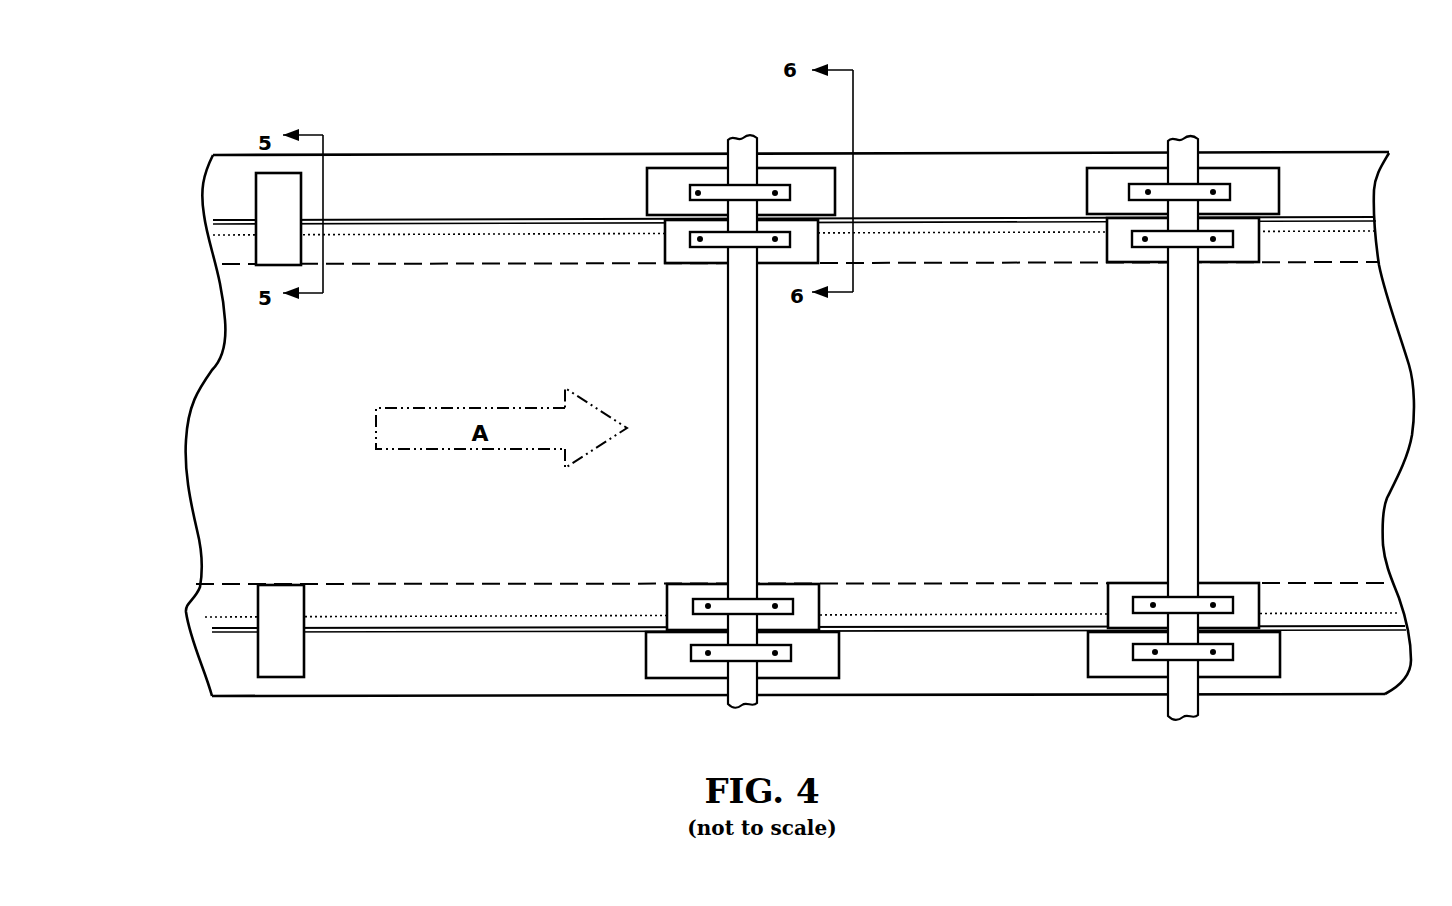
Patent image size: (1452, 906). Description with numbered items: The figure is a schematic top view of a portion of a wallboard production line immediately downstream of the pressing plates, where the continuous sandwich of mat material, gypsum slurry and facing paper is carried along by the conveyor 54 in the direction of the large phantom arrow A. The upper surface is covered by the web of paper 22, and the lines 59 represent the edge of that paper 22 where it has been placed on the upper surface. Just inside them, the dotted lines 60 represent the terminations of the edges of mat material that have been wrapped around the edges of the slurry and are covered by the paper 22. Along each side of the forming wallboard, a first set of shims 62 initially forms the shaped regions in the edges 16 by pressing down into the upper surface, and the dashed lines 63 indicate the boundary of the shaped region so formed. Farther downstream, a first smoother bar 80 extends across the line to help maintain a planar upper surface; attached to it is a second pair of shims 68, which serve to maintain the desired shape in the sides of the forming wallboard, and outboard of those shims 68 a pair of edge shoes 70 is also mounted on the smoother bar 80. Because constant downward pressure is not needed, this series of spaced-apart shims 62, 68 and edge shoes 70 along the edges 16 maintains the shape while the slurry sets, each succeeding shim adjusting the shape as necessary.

The edges 16 is at (925, 208).
The web of paper 22 is at (1288, 393).
The conveyor 54 is at (1016, 178).
The lines 59 is at (471, 218).
The dotted lines 60 is at (544, 228).
The first set of shims 62 is at (252, 193).
The dashed lines 63 is at (597, 262).
The second pair of shims 68 is at (676, 246).
The edge shoes 70 is at (672, 197).
The first smoother bar 80 is at (743, 397).